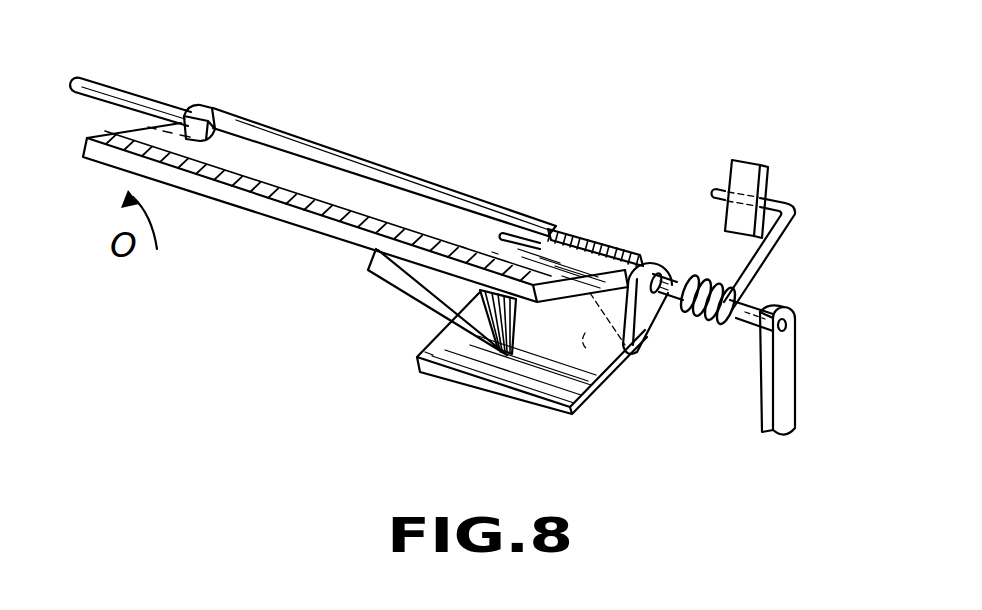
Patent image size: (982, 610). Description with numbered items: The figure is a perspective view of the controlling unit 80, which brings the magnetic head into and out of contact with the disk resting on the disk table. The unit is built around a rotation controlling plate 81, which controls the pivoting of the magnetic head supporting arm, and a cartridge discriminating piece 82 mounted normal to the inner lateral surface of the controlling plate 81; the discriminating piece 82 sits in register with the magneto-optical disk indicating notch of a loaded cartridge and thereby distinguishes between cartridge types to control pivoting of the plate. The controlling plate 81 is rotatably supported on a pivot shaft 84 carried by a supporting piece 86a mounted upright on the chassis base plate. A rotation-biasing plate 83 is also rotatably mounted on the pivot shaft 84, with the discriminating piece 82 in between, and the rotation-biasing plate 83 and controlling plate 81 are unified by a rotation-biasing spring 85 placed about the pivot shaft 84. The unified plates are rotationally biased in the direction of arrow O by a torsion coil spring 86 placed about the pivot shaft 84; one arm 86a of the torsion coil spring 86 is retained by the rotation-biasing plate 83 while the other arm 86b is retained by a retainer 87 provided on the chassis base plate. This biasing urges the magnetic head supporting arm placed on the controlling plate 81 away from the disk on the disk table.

The controlling unit 80 is at (320, 150).
The rotation controlling plate 81 is at (207, 134).
The cartridge discriminating piece 82 is at (437, 281).
The rotation-biasing plate 83 is at (507, 378).
The pivot shaft 84 is at (132, 95).
The rotation-biasing spring 85 is at (588, 244).
The torsion coil spring 86 is at (705, 323).
The supporting piece 86a is at (640, 358).
The spring wire end 86b is at (803, 212).
The retainer 87 is at (768, 183).